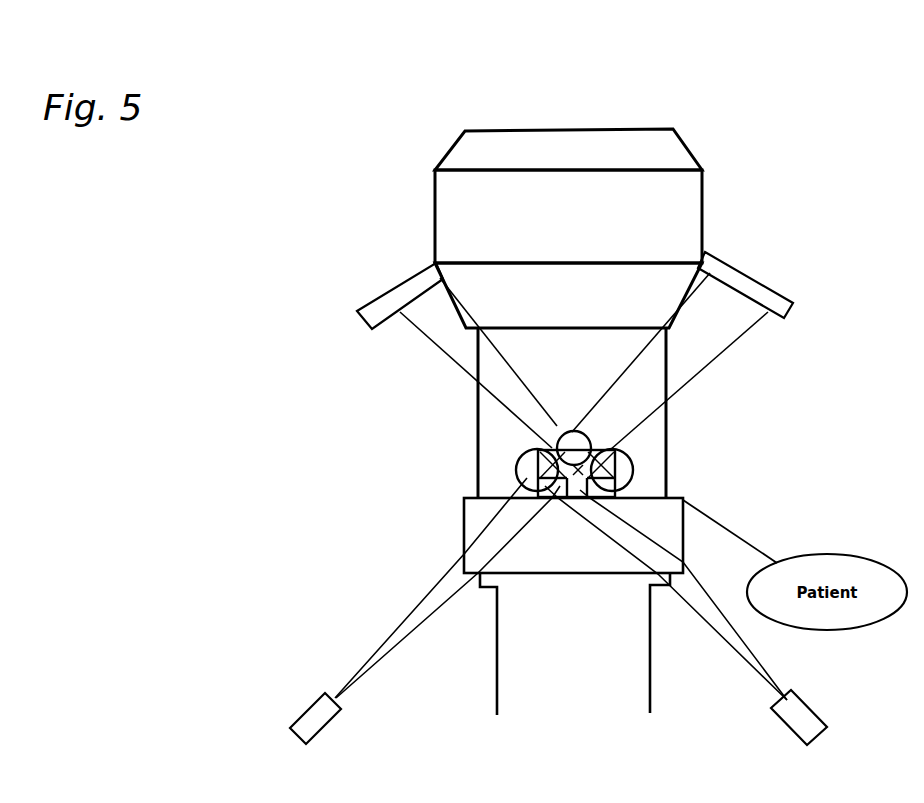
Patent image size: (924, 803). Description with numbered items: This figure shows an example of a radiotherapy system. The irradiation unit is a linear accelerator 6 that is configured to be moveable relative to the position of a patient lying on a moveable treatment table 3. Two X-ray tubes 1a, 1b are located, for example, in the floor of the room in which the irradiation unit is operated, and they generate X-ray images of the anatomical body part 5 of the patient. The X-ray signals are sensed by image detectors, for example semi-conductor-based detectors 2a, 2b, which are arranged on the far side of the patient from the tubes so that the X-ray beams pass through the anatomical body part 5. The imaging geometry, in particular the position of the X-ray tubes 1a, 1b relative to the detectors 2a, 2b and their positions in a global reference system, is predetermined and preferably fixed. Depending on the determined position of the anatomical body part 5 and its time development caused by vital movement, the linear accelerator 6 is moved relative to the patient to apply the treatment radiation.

The X-ray tube 1a is at (803, 720).
The X-ray tube 1b is at (313, 725).
The semi-conductor-based detector 2a is at (392, 290).
The semi-conductor-based detector 2b is at (762, 284).
The treatment table 3 is at (465, 538).
The anatomical body part 5 is at (558, 428).
The linear accelerator 6 is at (462, 218).